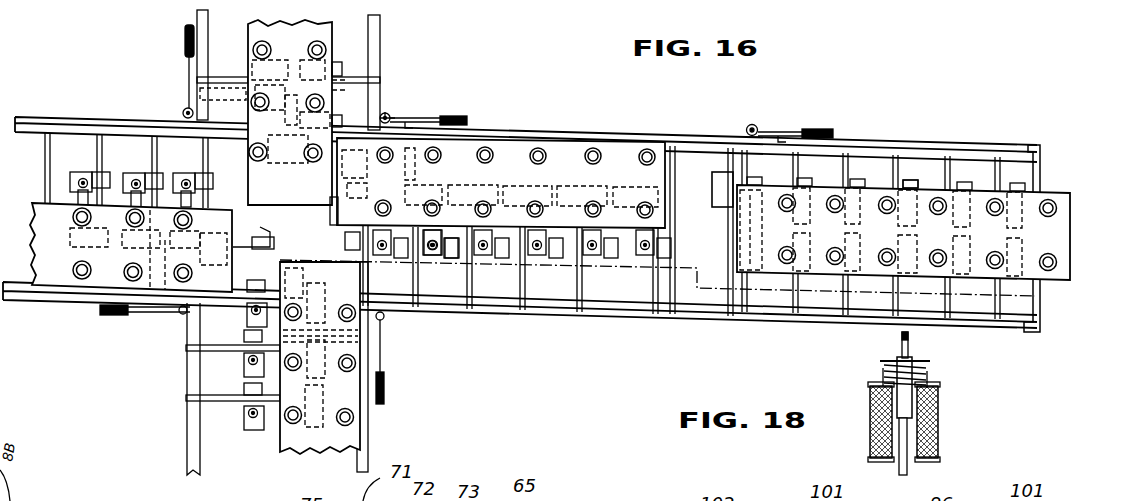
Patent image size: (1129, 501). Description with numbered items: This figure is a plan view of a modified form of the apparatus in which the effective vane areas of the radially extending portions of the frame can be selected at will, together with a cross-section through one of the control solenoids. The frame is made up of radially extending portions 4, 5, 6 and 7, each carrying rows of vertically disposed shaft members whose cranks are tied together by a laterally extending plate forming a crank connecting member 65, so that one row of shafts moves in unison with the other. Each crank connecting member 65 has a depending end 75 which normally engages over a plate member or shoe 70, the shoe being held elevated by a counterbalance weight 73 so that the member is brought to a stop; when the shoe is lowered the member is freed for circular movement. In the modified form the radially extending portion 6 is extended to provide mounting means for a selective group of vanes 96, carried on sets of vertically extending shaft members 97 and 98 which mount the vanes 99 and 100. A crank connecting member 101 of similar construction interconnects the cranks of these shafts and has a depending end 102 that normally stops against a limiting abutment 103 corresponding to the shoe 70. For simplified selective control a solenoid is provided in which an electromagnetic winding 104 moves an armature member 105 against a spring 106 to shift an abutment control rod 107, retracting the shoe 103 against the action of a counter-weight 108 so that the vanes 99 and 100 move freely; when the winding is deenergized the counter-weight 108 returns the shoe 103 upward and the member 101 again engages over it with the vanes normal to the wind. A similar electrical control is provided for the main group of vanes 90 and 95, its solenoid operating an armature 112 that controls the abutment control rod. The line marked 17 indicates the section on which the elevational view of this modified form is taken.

In FIG. 16, the radially extending portion 4 is at (72, 128).
In FIG. 16, the radially extending portion 5 is at (369, 48).
In FIG. 16, the radially extending portion 6 is at (492, 130).
In FIG. 16, the radially extending portion 7 is at (193, 363).
In FIG. 16, the section line 17- 17 is at (273, 244).
In FIG. 16, the crank connecting member 65 is at (57, 272).
In FIG. 16, the shoe 70 is at (236, 233).
In FIG. 16, the counterbalance weight 73 is at (447, 117).
In FIG. 16, the depending end 75 is at (333, 200).
In FIG. 16, the main group of vanes 90 is at (407, 248).
In FIG. 16, the main group of vanes 95 is at (486, 181).
In FIG. 16, the selective group of vanes 96 is at (858, 178).
In FIG. 16, the vertically extending shaft member 97 is at (590, 252).
In FIG. 16, the vertically extending shaft member 98 is at (596, 203).
In FIG. 16, the vane 99 is at (852, 272).
In FIG. 16, the vane 100 is at (911, 180).
In FIG. 16, the crank connecting member 101 is at (998, 222).
In FIG. 16, the depending end 102 is at (738, 241).
In FIG. 16, the limiting abutment 103 is at (718, 194).
In FIG. 18, the electromagnetic winding 104 is at (936, 426).
In FIG. 18, the armature member 105 is at (905, 397).
In FIG. 18, the spring 106 is at (918, 372).
In FIG. 16, the abutment control rod 107 is at (752, 124).
In FIG. 18, the abutment control rod 107 is at (910, 336).
In FIG. 16, the counter-weight 108 is at (816, 128).
In FIG. 16, the armature 112 is at (384, 113).